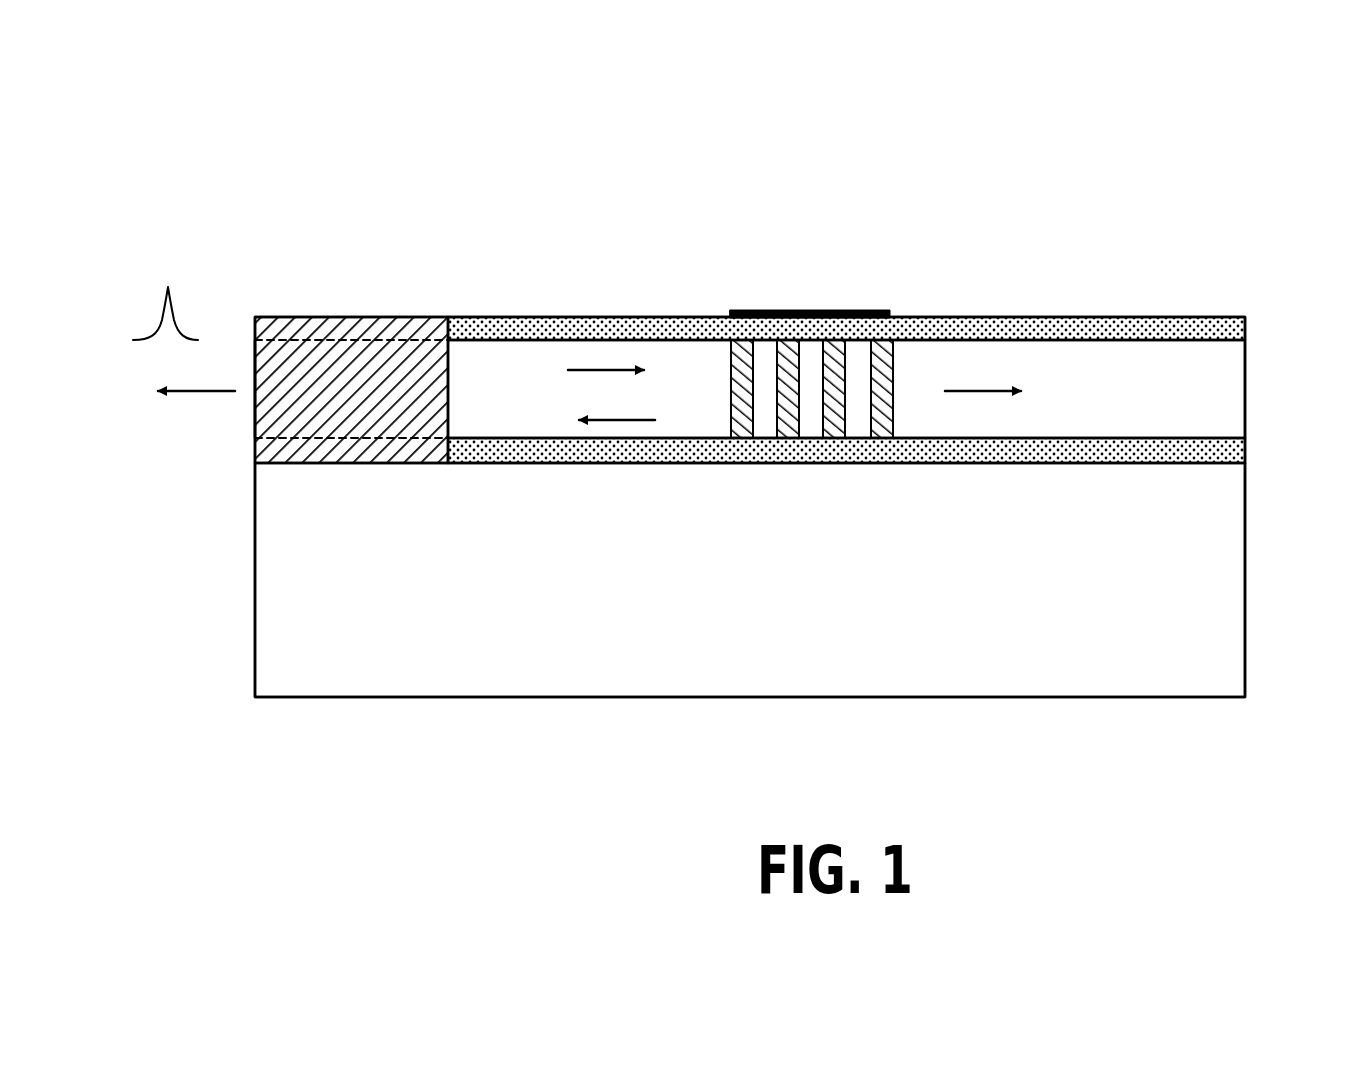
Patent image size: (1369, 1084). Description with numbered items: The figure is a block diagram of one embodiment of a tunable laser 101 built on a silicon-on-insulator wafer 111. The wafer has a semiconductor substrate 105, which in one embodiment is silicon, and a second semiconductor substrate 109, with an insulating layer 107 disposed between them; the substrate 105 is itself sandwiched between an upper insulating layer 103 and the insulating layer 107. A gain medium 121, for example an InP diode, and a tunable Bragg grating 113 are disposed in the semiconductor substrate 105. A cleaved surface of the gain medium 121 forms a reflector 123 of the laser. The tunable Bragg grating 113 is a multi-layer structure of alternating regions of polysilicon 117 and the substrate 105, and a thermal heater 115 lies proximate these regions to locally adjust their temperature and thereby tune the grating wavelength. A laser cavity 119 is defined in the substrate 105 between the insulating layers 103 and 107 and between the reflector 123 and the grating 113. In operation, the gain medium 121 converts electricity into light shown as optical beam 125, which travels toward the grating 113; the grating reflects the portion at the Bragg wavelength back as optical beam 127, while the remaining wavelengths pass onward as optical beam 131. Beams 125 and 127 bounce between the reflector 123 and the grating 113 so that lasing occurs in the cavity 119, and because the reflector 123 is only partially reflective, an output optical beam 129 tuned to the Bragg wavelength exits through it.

The tunable laser 101 is at (1250, 134).
The insulating layer 103 is at (1246, 325).
The semiconductor substrate 105 is at (1246, 386).
The insulating layer 107 is at (1246, 451).
The semiconductor substrate 109 is at (1246, 570).
The silicon-on-insulator (SOI) wafer 111 is at (1180, 253).
The tunable Bragg grating 113 is at (846, 247).
The thermal heater 115 is at (890, 310).
The polysilicon regions 117 is at (881, 445).
The laser cavity 119 is at (545, 355).
The gain medium 121 is at (343, 317).
The reflector 123 is at (250, 430).
The optical beam 125 is at (615, 360).
The optical beam 127 is at (614, 428).
The optical beam 129 is at (154, 403).
The optical beam 131 is at (965, 430).